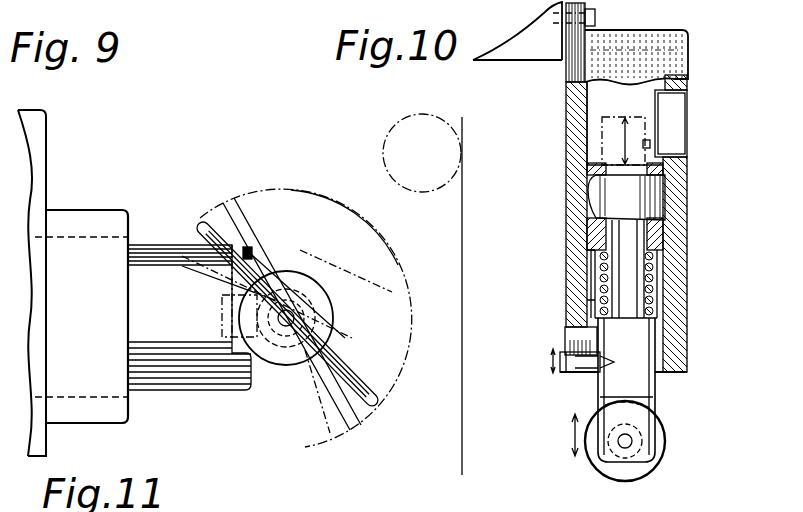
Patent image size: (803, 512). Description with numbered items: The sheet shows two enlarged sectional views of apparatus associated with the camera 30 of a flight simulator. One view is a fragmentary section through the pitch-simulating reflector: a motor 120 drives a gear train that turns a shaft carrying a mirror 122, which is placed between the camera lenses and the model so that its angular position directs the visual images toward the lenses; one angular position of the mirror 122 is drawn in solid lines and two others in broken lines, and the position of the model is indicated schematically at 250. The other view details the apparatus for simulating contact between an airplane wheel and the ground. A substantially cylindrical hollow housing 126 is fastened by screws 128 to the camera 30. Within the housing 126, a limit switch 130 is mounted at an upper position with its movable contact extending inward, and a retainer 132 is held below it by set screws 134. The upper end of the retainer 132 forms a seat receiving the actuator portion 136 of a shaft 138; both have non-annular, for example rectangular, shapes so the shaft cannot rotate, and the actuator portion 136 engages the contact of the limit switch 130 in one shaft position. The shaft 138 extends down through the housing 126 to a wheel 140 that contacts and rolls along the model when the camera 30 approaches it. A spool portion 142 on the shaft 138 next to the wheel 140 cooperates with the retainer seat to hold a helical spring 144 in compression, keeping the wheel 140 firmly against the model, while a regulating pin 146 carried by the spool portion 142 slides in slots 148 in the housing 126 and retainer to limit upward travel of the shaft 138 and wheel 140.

In FIG. 10, the camera 30 is at (505, 52).
In FIG. 9, the motor 120 is at (163, 366).
In FIG. 9, the mirror 122 is at (338, 346).
In FIG. 10, the hollow housing 126 is at (566, 172).
In FIG. 10, the screws 128 is at (597, 17).
In FIG. 10, the limit switch 130 is at (679, 104).
In FIG. 10, the retainer 132 is at (660, 243).
In FIG. 10, the set screws 134 is at (672, 197).
In FIG. 10, the actuator portion 136 is at (590, 203).
In FIG. 10, the shaft 138 is at (627, 290).
In FIG. 9, the wheel 140 is at (405, 182).
In FIG. 10, the wheel 140 is at (662, 432).
In FIG. 10, the spool portion 142 is at (630, 381).
In FIG. 10, the helical spring 144 is at (592, 300).
In FIG. 10, the regulating pin 146 is at (556, 366).
In FIG. 10, the slots 148 is at (570, 335).
In FIG. 9, the position of the model 250 is at (462, 227).